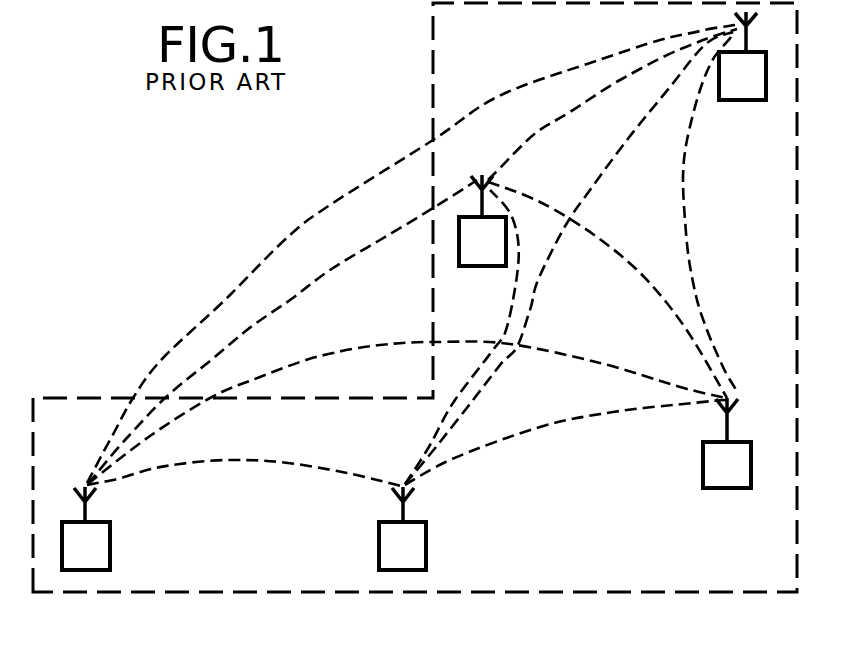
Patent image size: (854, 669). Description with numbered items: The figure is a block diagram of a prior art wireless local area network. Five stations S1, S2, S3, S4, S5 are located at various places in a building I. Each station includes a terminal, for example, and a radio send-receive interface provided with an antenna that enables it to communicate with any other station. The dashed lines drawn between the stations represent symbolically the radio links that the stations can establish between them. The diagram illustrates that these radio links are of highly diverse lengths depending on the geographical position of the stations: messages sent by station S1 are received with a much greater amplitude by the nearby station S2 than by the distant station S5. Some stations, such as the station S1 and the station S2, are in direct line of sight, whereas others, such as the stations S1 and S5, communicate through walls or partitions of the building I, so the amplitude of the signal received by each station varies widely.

The station S1 is at (97, 547).
The station S2 is at (415, 547).
The station S3 is at (719, 475).
The station S4 is at (472, 250).
The station S5 is at (737, 88).
The building I is at (255, 592).